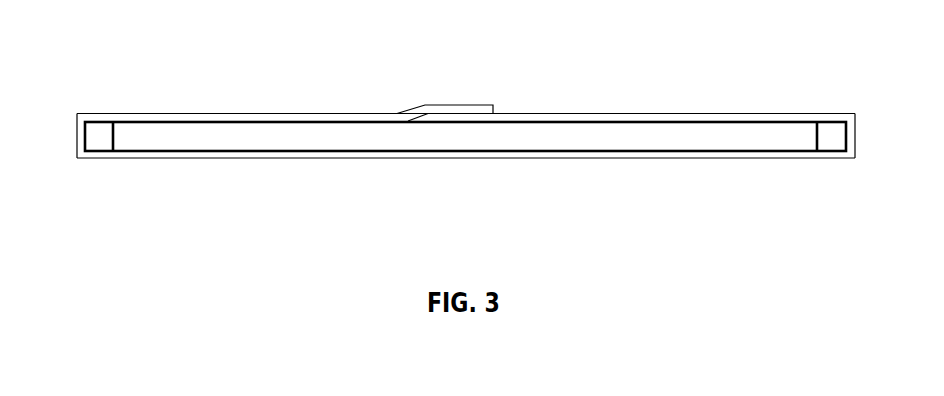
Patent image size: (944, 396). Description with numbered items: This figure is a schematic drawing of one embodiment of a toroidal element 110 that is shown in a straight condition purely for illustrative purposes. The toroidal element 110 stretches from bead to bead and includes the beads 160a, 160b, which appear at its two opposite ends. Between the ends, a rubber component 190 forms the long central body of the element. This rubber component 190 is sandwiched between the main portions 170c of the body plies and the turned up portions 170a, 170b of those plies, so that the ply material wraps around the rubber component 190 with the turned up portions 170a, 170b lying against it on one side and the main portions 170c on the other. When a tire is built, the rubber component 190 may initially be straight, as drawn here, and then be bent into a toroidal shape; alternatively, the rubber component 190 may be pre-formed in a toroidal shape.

The toroidal element 110 is at (455, 136).
The bead 160a is at (827, 140).
The bead 160b is at (100, 142).
The turned up portion of body ply 170a is at (533, 113).
The turned up portion of body ply 170b is at (287, 119).
The main portion of body plies 170c is at (502, 153).
The rubber component 190 is at (612, 137).